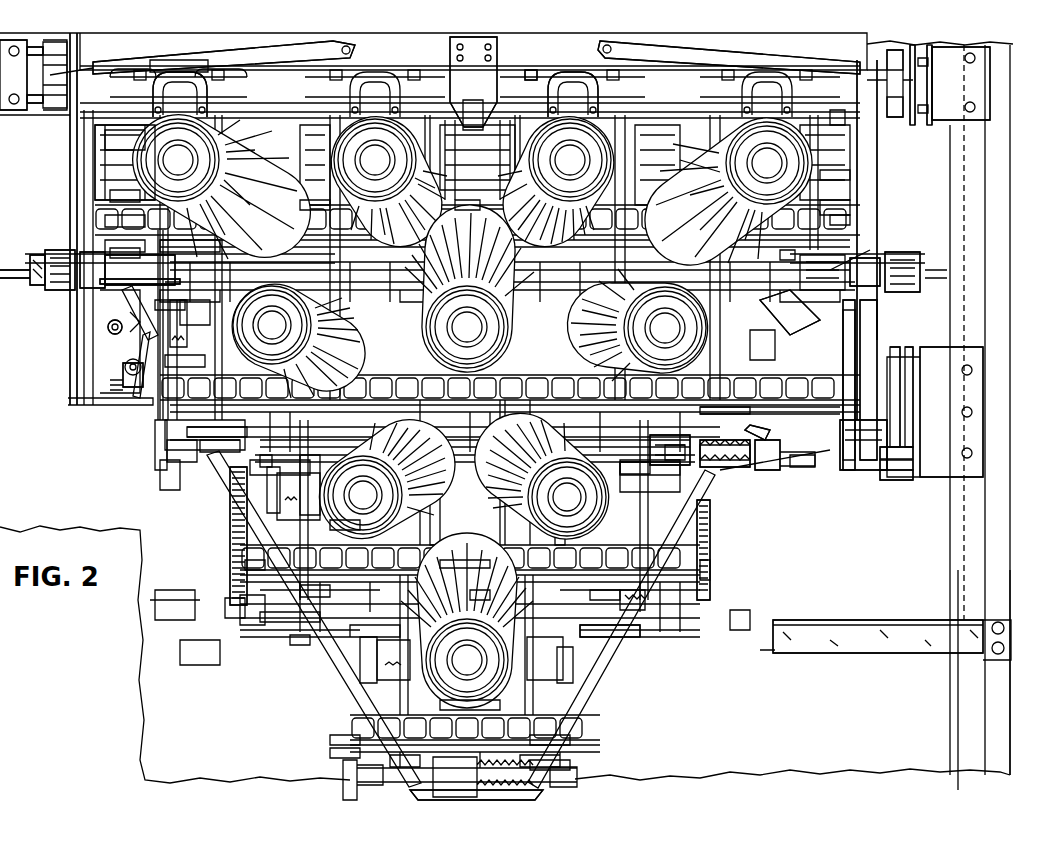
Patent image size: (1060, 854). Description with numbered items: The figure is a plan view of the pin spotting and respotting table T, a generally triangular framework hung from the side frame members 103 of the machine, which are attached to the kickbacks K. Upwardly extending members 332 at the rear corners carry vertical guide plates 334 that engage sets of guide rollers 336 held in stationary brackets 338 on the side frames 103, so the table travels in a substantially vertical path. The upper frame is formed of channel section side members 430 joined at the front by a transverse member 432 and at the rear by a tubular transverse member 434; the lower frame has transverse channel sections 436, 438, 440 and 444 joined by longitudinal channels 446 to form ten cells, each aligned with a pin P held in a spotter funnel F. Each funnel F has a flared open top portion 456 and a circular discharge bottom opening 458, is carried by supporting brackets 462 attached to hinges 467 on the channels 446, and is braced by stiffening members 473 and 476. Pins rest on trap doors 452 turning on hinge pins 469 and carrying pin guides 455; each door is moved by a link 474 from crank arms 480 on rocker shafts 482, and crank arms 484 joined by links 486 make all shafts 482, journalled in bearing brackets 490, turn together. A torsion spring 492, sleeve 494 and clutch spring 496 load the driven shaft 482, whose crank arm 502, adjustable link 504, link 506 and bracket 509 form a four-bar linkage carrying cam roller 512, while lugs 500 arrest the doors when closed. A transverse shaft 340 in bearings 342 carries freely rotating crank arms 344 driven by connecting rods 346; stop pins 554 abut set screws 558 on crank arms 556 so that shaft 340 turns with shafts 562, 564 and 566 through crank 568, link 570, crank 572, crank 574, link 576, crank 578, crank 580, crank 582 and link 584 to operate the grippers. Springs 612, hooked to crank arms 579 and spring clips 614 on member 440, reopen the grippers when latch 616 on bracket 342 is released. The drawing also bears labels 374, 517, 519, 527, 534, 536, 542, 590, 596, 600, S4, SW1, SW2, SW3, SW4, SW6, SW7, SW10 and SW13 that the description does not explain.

The side frame members 103 is at (975, 187).
The upwardly extending members 332 is at (262, 58).
The vertical guide plate 334 is at (55, 73).
The guide rollers 336 is at (895, 60).
The stationary brackets 338 is at (40, 110).
The transverse shaft 340 is at (32, 272).
The bearings 342 is at (122, 290).
The crank arms 344 is at (110, 283).
The connecting rods 346 is at (60, 282).
The pivot screw 374 is at (108, 330).
The channel section side members 430 is at (90, 160).
The transverse member 432 is at (520, 800).
The transverse member 434 is at (500, 50).
The transverse channel section 436 is at (560, 745).
The transverse channel section 438 is at (510, 580).
The transverse channel section 440 is at (770, 432).
The transverse channel section 444 is at (460, 70).
The longitudinal channels 446 is at (665, 85).
The trap doors 452 is at (760, 335).
The pin guide 455 is at (400, 530).
The open top portion 456 is at (690, 158).
The discharge bottom opening 458 is at (205, 163).
The supporting brackets 462 is at (100, 172).
The hinges 467 is at (470, 200).
The hinge pin 469 is at (712, 560).
The stiffening member 473 is at (440, 172).
The link 474 is at (205, 78).
The stiffening member 476 is at (520, 318).
The crank arms 480 is at (372, 100).
The rocker shaft 482 is at (140, 175).
The crank arm 484 is at (835, 110).
The links 486 is at (850, 175).
The bearing brackets 490 is at (780, 470).
The torsion spring 492 is at (720, 470).
The sleeve 494 is at (700, 470).
The locking spring 496 is at (690, 470).
The lugs 500 is at (583, 65).
The crank arm 502 is at (850, 230).
The adjustable link 504 is at (845, 395).
The link 506 is at (866, 470).
The bracket 509 is at (875, 355).
The cam roller 512 is at (885, 480).
The washer 517 is at (890, 480).
The bolt 519 is at (895, 480).
The rod 527 is at (888, 380).
The block 534 is at (100, 218).
The cam 536 is at (140, 210).
The bar 542 is at (172, 244).
The stop pin 554 is at (110, 250).
The crank arm 556 is at (70, 285).
The adjustable set screw 558 is at (35, 255).
The shaft 562 is at (205, 450).
The shaft 564 is at (515, 600).
The shaft 566 is at (560, 770).
The crank 568 is at (180, 310).
The link 570 is at (160, 425).
The crank 572 is at (168, 450).
The crank 574 is at (265, 465).
The link 576 is at (245, 565).
The crank 578 is at (240, 615).
The crank arms 579 is at (228, 604).
The crank 580 is at (325, 640).
The crank 582 is at (350, 755).
The link 584 is at (350, 738).
The cam 590 is at (790, 250).
The spring 596 is at (620, 600).
The spring 600 is at (660, 600).
The springs 612 is at (230, 540).
The spring clips 614 is at (235, 428).
The latch 616 is at (135, 330).
The funnel F is at (291, 152).
The pins P is at (182, 158).
The pin spotting and respotting table T is at (804, 527).
The kickbacks K is at (975, 718).
The switch S4 is at (128, 390).
The switch SW1 is at (480, 770).
The switch SW2 is at (360, 665).
The switch SW3 is at (575, 670).
The switch SW4 is at (267, 490).
The switch SW6 is at (712, 530).
The switch SW7 is at (196, 349).
The switch SW10 is at (855, 330).
The switch SW13 is at (343, 790).